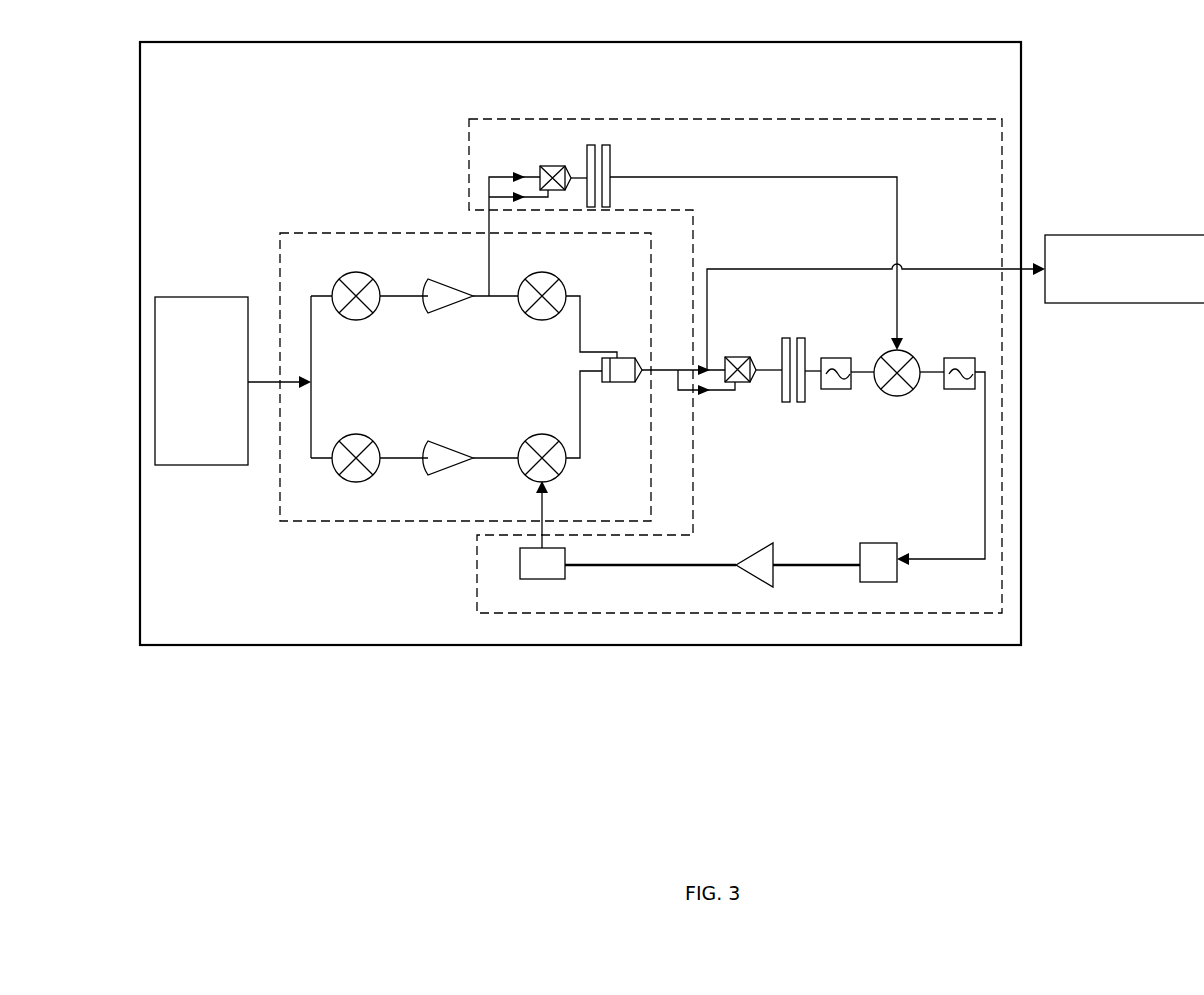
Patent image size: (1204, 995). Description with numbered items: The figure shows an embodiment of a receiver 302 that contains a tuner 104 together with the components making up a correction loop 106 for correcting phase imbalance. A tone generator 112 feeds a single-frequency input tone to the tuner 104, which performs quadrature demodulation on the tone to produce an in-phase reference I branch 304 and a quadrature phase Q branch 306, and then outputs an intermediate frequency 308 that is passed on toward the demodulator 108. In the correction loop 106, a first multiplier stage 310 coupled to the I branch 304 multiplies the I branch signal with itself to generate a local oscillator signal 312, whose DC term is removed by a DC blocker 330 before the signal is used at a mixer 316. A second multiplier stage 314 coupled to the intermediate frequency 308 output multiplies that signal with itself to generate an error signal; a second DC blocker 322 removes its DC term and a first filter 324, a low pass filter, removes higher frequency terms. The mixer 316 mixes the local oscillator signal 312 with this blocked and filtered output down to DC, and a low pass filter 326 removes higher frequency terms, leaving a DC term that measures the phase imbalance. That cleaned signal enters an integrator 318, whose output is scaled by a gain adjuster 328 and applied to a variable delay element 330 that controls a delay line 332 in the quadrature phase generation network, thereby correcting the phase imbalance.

The receiver 302 is at (580, 343).
The tuner 104 is at (465, 377).
The I branch 304 is at (311, 348).
The Q branch 306 is at (311, 420).
The correction loop 106 is at (812, 119).
The tone generator 112 is at (233, 381).
The demodulator 108 is at (1124, 269).
The intermediate frequency 308 is at (667, 370).
The first multiplier stage 310 is at (546, 166).
The DC blocker / variable delay element 330 is at (605, 145).
The local oscillator signal 312 is at (810, 177).
The second multiplier stage 314 is at (735, 356).
The second DC blocker 322 is at (795, 337).
The first filter 324 is at (833, 357).
The mixer 316 is at (897, 396).
The low pass filter 326 is at (952, 357).
The integrator 318 is at (880, 543).
The gain adjuster 328 is at (766, 545).
The delay line 332 is at (548, 504).